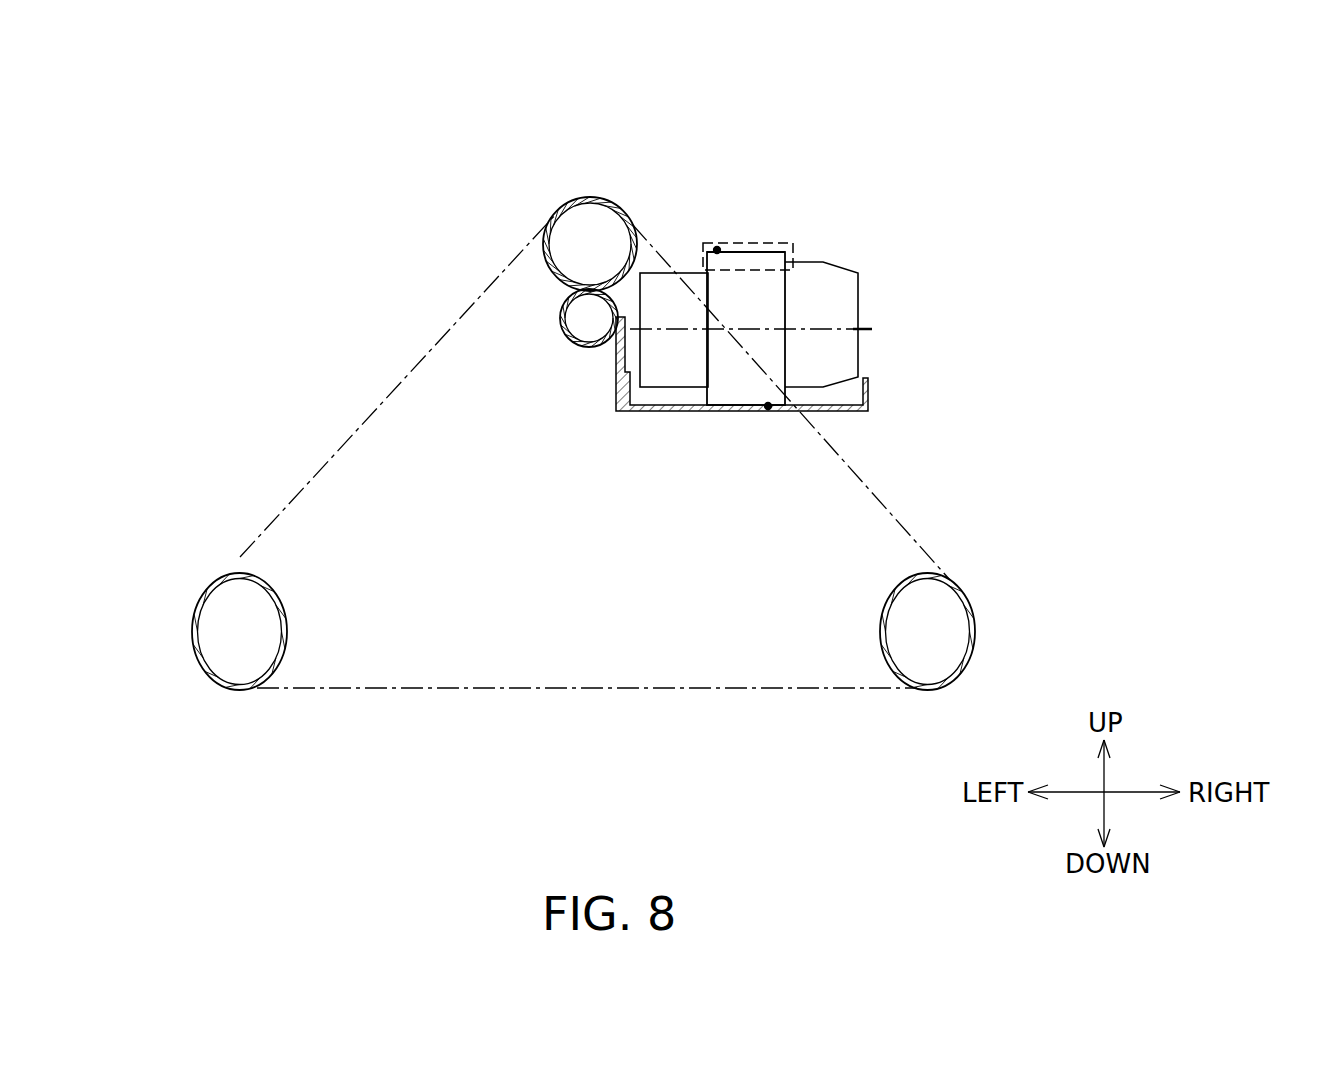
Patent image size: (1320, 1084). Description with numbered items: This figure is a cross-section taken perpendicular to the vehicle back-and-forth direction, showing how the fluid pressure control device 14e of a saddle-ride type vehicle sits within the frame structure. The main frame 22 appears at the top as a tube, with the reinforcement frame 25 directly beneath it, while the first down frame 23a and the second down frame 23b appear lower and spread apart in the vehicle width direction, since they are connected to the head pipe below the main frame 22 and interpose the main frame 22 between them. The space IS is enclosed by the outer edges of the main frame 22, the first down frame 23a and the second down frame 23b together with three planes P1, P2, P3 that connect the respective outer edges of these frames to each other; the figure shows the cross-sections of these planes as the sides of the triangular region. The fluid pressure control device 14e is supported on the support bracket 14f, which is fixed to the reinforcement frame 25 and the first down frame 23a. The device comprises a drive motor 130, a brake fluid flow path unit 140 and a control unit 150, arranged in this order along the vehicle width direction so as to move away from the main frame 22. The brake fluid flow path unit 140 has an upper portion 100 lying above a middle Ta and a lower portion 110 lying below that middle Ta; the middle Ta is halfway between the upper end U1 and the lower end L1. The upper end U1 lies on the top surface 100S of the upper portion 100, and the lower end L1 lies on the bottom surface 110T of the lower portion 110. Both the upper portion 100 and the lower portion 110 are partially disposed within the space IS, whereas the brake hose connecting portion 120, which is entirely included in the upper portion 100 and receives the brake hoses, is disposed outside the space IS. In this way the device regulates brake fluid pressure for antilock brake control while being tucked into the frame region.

The fluid pressure control device 14e is at (780, 152).
The support bracket 14f is at (870, 393).
The main frame 22 is at (582, 197).
The reinforcement frame 25 is at (588, 345).
The first down frame 23a is at (957, 670).
The second down frame 23b is at (213, 682).
The upper portion 100 is at (762, 288).
The top surface 100S is at (747, 250).
The lower portion 110 is at (770, 368).
The bottom surface 110T is at (695, 410).
The brake hose connecting portion 120 is at (783, 242).
The drive motor 130 is at (655, 388).
The brake fluid flow path unit 140 is at (730, 395).
The control unit 150 is at (842, 388).
The upper end U1 is at (717, 250).
The lower end L1 is at (768, 406).
The middle Ta is at (867, 328).
The space IS is at (405, 353).
The plane P1 is at (910, 535).
The plane P2 is at (317, 468).
The plane P3 is at (598, 690).